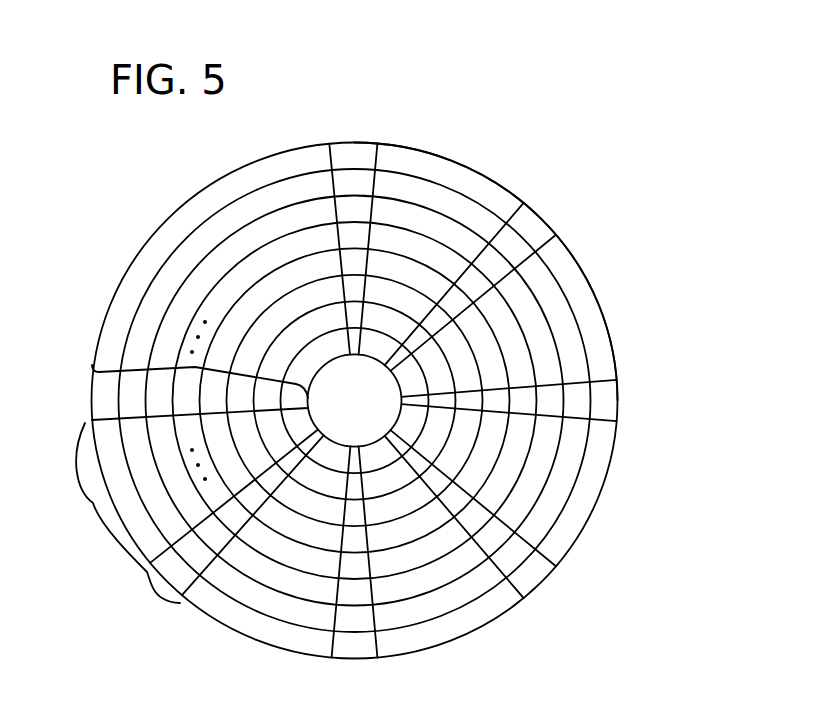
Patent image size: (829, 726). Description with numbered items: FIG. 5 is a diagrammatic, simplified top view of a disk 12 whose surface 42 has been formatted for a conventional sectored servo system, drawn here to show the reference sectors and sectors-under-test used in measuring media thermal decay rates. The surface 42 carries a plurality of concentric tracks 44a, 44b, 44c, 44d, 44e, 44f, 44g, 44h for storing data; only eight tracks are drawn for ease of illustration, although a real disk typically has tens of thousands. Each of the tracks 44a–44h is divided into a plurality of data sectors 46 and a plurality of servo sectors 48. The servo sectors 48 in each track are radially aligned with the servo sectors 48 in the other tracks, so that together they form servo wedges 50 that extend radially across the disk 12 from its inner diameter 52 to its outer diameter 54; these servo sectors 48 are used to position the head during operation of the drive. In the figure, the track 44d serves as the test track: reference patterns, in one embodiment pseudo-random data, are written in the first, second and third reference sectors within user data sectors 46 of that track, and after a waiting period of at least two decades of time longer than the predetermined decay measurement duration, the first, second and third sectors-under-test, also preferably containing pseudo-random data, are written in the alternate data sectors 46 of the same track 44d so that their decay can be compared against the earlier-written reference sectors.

The disk 12 is at (231, 170).
The surface 42 is at (335, 196).
The track 44a is at (413, 160).
The track 44b is at (452, 200).
The track 44c is at (450, 237).
The track 44d is at (447, 262).
The track 44e is at (438, 515).
The track 44f is at (402, 506).
The track 44g is at (388, 487).
The track 44h is at (370, 463).
The data sectors 46 is at (93, 503).
The servo sectors 48 is at (180, 603).
The servo wedges 50 is at (192, 368).
The inner diameter 52 is at (315, 418).
The outer diameter 54 is at (228, 630).